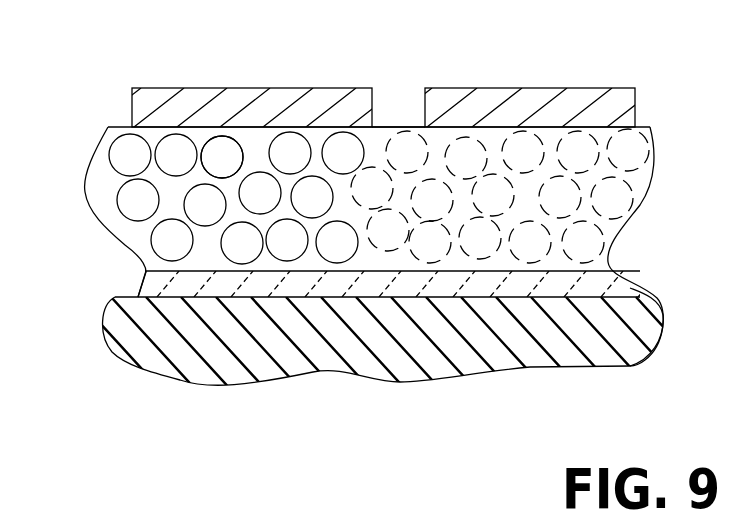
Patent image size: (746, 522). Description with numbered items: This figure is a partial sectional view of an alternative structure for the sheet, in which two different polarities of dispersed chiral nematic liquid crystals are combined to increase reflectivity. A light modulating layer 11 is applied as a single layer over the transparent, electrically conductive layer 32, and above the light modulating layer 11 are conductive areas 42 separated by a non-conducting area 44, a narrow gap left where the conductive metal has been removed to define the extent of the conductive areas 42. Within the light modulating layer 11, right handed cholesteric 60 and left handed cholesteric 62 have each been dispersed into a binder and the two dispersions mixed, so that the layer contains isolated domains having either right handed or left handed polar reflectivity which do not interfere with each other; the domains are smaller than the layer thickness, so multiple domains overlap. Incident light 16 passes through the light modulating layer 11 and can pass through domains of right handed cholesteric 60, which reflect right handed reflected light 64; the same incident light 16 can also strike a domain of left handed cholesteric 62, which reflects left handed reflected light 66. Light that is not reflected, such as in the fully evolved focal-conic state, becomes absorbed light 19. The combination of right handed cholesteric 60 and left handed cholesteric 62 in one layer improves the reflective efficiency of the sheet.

The light modulating layer 11 is at (128, 265).
The conductive areas 42 is at (186, 101).
The non-conducting areas 44 is at (398, 95).
The right handed cholesteric 60 is at (637, 152).
The left handed cholesteric 62 is at (624, 198).
The transparent, electrically conductive layer 32 is at (140, 290).
The incident light 16 is at (222, 182).
The right handed reflected light 64 is at (206, 210).
The left handed reflected light 66 is at (222, 182).
The absorbed light 19 is at (468, 131).